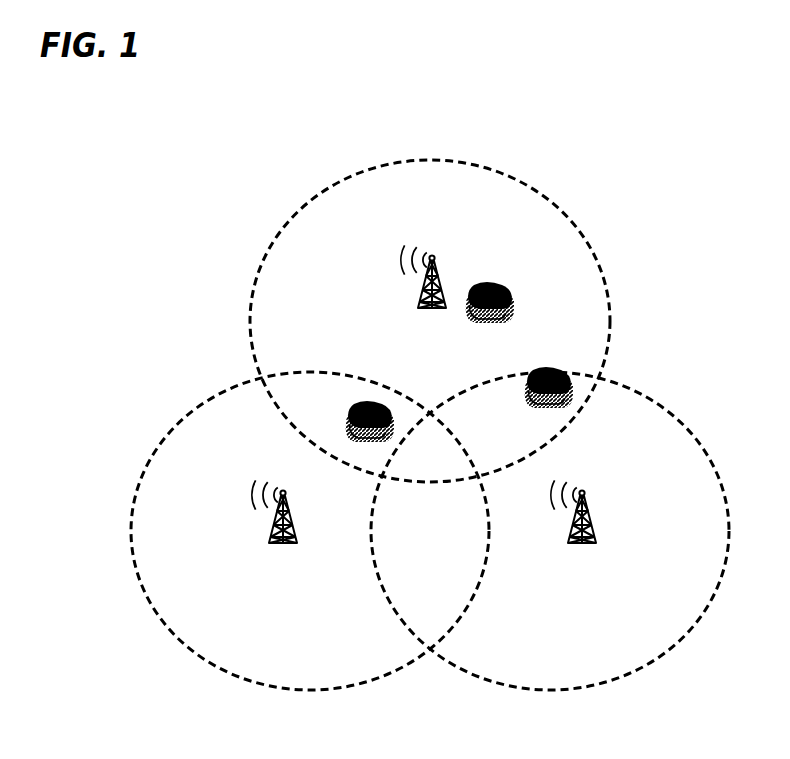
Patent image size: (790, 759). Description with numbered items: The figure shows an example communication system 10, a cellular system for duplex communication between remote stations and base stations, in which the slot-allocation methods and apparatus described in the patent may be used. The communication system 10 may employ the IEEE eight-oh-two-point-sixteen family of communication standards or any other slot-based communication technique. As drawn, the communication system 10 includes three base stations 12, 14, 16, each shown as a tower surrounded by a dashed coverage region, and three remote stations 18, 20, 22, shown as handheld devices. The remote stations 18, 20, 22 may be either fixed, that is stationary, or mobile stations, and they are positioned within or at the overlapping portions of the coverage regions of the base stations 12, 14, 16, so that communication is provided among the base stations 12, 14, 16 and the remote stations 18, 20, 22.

The communication system 10 is at (626, 122).
The base station 12 is at (426, 306).
The base station 14 is at (284, 545).
The base station 16 is at (586, 546).
The remote station 18 is at (508, 315).
The remote station 20 is at (366, 400).
The remote station 22 is at (565, 403).